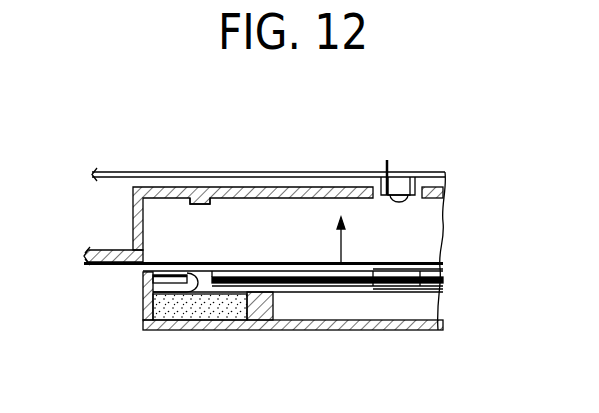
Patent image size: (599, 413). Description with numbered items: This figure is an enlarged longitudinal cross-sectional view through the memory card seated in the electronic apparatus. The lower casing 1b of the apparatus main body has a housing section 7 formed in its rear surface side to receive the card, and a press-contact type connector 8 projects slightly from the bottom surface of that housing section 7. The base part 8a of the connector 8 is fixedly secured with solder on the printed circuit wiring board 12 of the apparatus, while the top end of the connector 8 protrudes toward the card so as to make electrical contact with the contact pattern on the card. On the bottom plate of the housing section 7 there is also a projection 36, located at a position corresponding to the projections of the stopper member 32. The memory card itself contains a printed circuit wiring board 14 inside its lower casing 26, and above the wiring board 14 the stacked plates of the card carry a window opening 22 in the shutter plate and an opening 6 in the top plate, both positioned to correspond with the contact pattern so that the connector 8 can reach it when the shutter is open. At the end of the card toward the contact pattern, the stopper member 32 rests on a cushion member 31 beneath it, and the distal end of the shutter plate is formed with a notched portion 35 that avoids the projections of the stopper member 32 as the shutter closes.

The printed circuit wiring board 12 is at (115, 171).
The projection 36 is at (212, 205).
The press-contact type connector 8 is at (386, 172).
The base part 8a is at (405, 185).
The housing section 7 is at (133, 217).
The opening 6 is at (400, 270).
The lower casing 1b is at (95, 263).
The notched portion 35 is at (150, 289).
The printed circuit wiring board 14 is at (430, 292).
The stopper member 32 is at (203, 287).
The cushion member 31 is at (233, 308).
The window opening 22 is at (303, 284).
The lower casing 26 is at (393, 325).